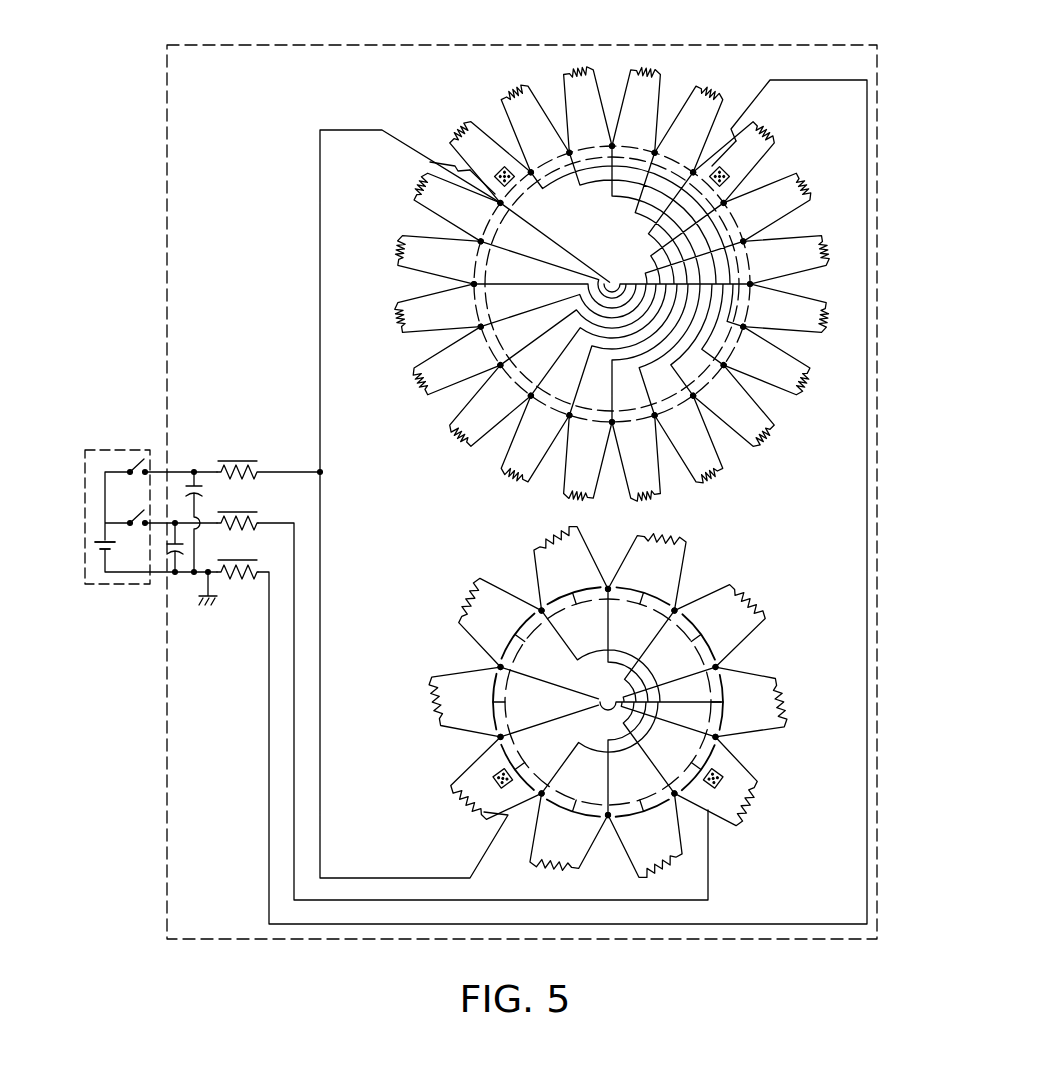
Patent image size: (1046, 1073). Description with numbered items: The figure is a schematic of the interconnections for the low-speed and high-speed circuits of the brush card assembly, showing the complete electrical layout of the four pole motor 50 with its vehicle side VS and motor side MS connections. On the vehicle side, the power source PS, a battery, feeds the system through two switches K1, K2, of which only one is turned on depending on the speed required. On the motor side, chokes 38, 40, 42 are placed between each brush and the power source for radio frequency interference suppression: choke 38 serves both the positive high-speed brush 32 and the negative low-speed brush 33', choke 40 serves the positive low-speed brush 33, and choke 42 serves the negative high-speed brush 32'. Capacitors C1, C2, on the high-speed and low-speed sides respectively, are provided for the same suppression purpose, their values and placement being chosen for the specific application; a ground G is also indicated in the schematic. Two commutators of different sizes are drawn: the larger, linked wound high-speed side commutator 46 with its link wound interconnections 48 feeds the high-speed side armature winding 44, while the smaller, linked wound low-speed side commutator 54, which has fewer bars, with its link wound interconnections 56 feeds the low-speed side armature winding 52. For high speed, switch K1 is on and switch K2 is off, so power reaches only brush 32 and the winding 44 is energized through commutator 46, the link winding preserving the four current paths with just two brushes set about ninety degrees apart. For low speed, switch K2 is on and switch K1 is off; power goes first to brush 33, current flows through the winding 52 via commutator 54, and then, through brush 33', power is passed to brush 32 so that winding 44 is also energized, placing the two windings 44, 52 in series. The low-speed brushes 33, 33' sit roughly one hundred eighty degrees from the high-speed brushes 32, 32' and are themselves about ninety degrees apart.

The positive brush 32 is at (488, 145).
The negative brush 32' is at (742, 165).
The positive brush 33 is at (734, 786).
The negative brush 33' is at (482, 786).
The HS side armature winding 44 is at (832, 264).
The HS side commutator 46 is at (737, 354).
The link wound interconnections 48 is at (612, 426).
The LS side armature winding 52 is at (790, 703).
The LS side commutator 54 is at (720, 739).
The link wound interconnections 56 is at (641, 796).
The motor 50 is at (880, 781).
The motor side MS is at (166, 738).
The power source PS is at (96, 560).
The vehicle side VS is at (126, 590).
The switch K1 is at (136, 455).
The switch K2 is at (122, 462).
The capacitor C1 is at (186, 470).
The capacitor C2 is at (170, 560).
The ground G is at (205, 607).
The choke 38 is at (238, 458).
The choke 40 is at (254, 498).
The choke 42 is at (238, 588).